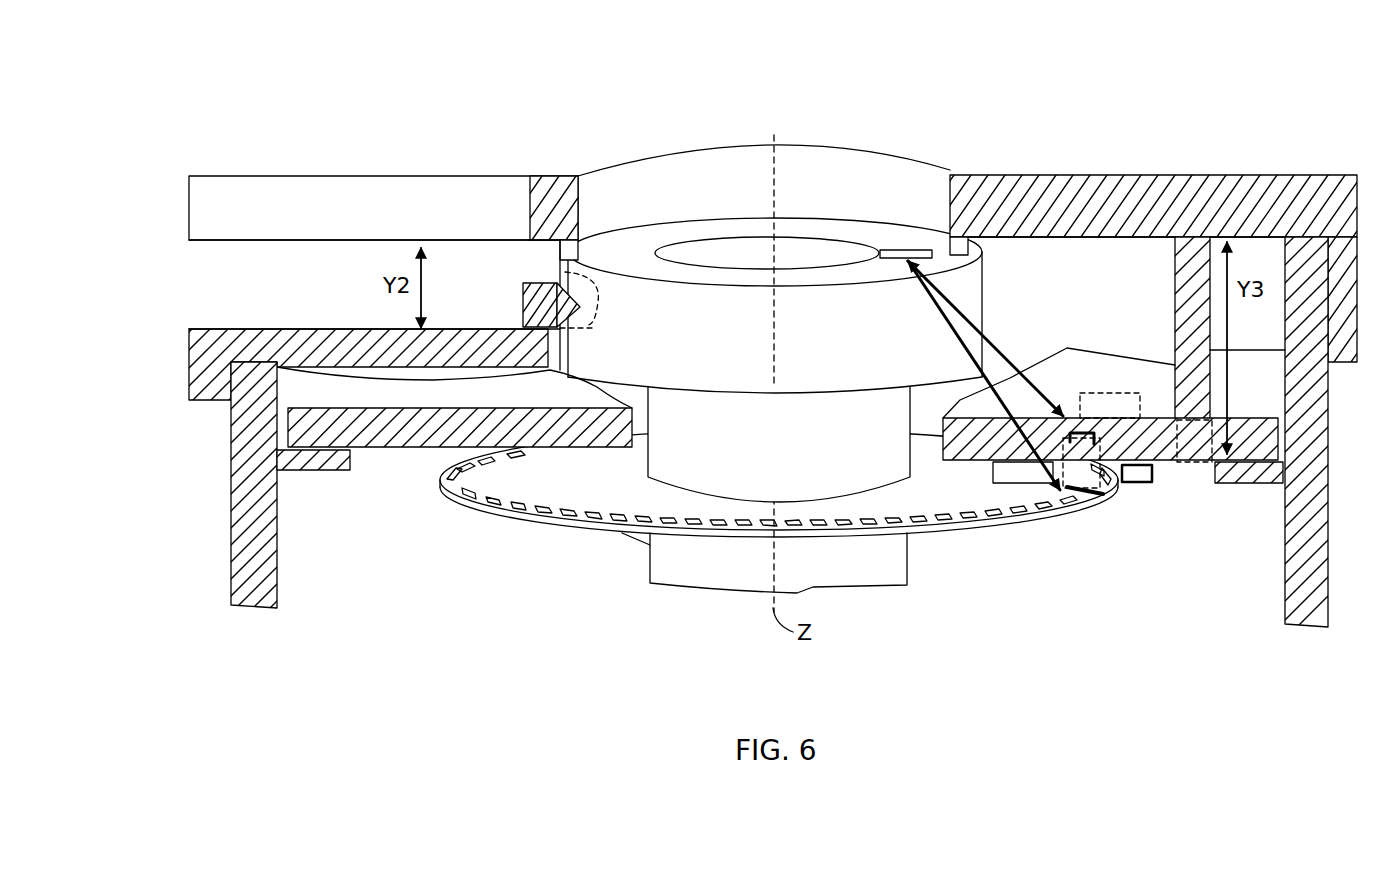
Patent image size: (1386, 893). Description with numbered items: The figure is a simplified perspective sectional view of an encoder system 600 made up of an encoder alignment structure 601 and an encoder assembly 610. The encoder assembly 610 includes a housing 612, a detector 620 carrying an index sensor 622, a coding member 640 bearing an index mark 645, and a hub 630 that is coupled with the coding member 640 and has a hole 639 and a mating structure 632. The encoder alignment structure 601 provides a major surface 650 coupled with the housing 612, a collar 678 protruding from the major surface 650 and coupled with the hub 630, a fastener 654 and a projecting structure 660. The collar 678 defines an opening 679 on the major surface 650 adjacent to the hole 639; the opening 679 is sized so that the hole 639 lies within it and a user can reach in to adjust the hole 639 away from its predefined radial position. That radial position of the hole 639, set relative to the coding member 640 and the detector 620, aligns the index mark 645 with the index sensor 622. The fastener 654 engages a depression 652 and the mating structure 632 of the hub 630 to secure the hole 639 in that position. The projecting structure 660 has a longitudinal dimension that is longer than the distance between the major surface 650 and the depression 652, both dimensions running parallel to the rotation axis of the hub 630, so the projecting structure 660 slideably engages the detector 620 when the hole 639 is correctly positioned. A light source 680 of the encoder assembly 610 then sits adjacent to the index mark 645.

The encoder system 600 is at (195, 111).
The encoder alignment structure 601 is at (1280, 156).
The encoder assembly 610 is at (220, 498).
The housing 612 is at (280, 530).
The detector 620 is at (1253, 373).
The index sensor 622 is at (1090, 392).
The hub 630 is at (808, 406).
The mating structure 632 is at (560, 280).
The hole 639 is at (905, 248).
The coding member 640 is at (952, 530).
The index mark 645 is at (1103, 494).
The major surface 650 is at (1040, 238).
The depression 652 is at (270, 318).
The fastener 654 is at (520, 298).
The projecting structure 660 is at (1175, 267).
The collar 678 is at (948, 236).
The opening 679 is at (818, 178).
The light source 680 is at (1156, 480).